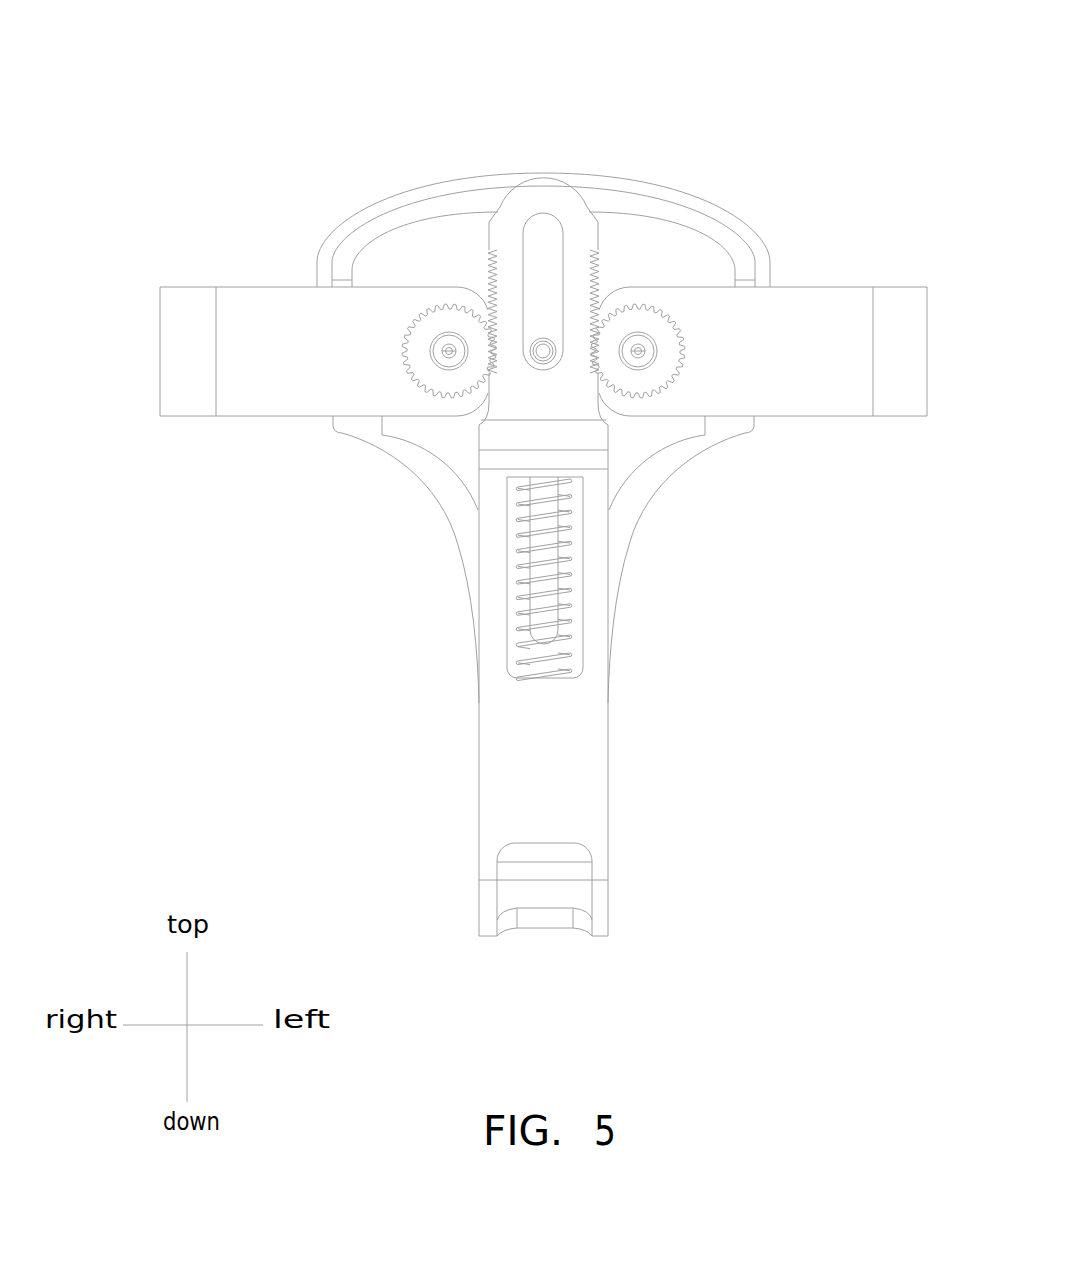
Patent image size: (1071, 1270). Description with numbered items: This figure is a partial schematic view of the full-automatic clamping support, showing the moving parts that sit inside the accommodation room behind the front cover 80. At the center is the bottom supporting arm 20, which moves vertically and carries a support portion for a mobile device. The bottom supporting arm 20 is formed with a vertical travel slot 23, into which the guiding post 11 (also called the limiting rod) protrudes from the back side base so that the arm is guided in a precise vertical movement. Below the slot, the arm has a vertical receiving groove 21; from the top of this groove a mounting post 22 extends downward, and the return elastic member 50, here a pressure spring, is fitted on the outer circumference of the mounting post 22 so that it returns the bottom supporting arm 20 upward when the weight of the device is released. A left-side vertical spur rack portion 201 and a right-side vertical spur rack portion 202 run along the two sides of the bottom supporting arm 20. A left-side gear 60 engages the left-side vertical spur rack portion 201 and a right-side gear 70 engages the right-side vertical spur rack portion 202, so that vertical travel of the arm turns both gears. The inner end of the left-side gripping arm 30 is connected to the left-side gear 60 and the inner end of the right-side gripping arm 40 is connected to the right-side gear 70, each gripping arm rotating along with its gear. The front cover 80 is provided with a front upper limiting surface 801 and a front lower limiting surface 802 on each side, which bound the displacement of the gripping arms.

The guiding post 11 is at (545, 343).
The bottom supporting arm 20 is at (584, 787).
The receiving groove 21 is at (508, 528).
The mounting post 22 is at (533, 563).
The travel slot 23 is at (540, 260).
The left-side gripping arm 30 is at (812, 388).
The right-side gripping arm 40 is at (262, 390).
The return elastic member 50 is at (522, 590).
The left-side gear 60 is at (435, 325).
The right-side gear 70 is at (672, 323).
The front cover 80 is at (630, 227).
The left-side vertical spur rack portion 201 is at (490, 270).
The right-side vertical spur rack portion 202 is at (597, 277).
The front upper limiting surface 801 is at (370, 210).
The front lower limiting surface 802 is at (338, 428).